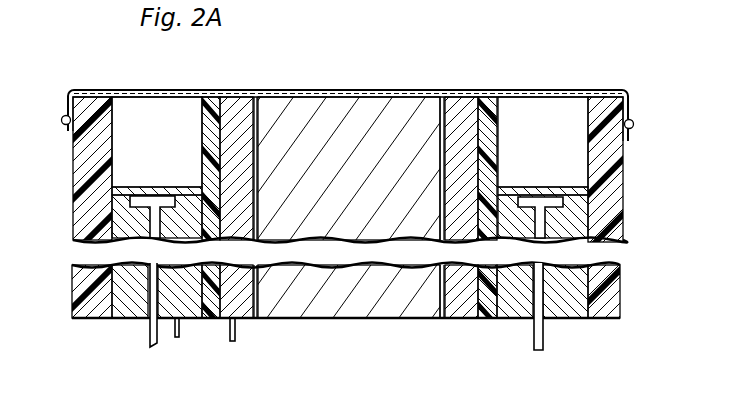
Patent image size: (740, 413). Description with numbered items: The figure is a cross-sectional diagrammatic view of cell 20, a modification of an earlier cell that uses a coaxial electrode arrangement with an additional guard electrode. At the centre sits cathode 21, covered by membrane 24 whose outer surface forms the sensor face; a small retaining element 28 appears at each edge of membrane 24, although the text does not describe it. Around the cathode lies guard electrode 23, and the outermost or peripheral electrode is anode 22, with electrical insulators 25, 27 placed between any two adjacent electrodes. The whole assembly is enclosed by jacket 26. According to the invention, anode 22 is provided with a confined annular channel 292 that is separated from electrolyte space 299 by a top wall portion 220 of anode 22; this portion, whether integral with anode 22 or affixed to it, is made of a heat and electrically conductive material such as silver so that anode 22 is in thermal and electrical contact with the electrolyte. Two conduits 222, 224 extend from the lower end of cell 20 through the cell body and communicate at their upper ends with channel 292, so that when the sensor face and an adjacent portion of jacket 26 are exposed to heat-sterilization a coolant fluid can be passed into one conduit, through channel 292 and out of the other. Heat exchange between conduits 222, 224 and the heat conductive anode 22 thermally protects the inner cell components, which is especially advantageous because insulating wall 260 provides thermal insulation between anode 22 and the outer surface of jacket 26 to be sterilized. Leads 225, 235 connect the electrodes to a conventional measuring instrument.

The cell 20 is at (612, 77).
The cathode 21 is at (395, 111).
The anode 22 is at (131, 306).
The guard electrode 23 is at (236, 302).
The membrane 24 is at (176, 89).
The electrical insulator 25 is at (255, 320).
The jacket 26 is at (74, 213).
The electrical insulator 27 is at (487, 312).
The clip 28 is at (61, 118).
The top wall portion 220 is at (149, 178).
The conduit 222 is at (537, 351).
The conduit 224 is at (148, 348).
The lead 225 is at (177, 338).
The lead 235 is at (232, 343).
The insulating wall 260 is at (603, 226).
The annular channel 292 is at (131, 201).
The electrolyte space 299 is at (151, 164).